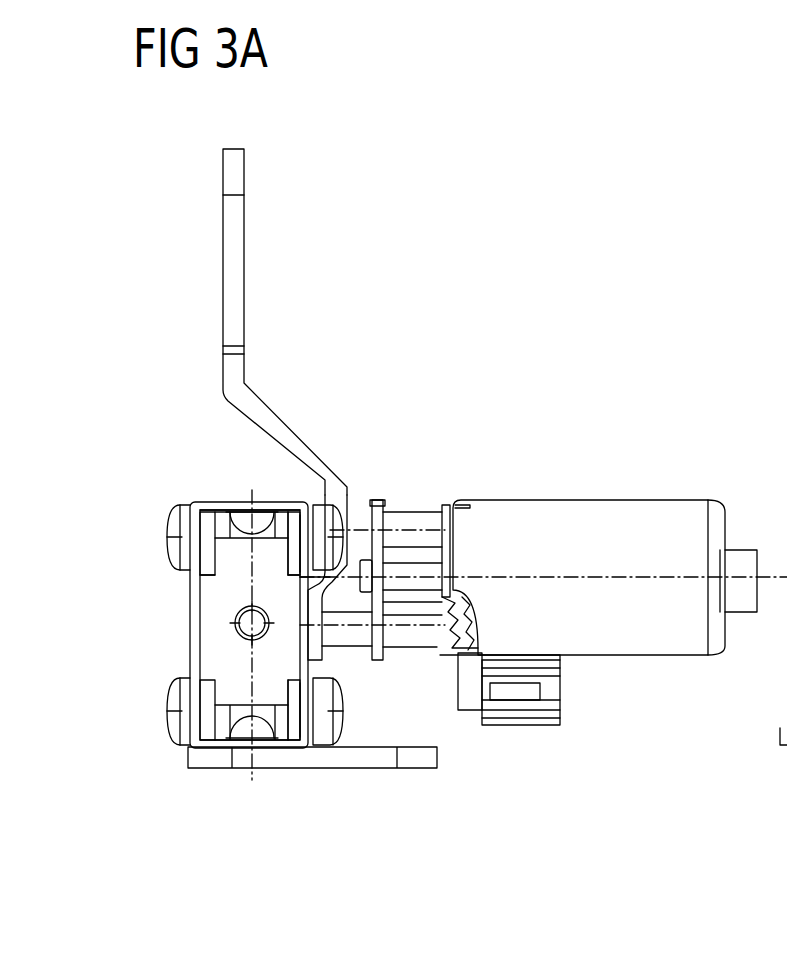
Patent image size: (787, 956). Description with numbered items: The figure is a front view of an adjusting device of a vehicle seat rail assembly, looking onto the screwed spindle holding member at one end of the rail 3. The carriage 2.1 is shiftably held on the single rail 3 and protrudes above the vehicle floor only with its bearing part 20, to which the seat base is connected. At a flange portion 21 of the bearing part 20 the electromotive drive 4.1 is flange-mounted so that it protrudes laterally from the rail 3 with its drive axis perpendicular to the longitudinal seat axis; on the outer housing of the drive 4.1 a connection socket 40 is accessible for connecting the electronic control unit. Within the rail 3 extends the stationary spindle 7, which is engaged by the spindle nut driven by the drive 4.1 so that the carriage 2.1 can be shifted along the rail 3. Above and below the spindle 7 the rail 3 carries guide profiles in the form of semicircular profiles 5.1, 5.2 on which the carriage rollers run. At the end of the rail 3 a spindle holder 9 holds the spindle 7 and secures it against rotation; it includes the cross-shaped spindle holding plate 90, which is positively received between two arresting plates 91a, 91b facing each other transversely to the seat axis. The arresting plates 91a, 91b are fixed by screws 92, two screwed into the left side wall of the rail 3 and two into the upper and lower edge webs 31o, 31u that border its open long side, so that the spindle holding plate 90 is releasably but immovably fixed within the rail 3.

The bearing part 20 is at (233, 173).
The carriage 2.1 is at (368, 238).
The electromotive drive 4.1 is at (656, 470).
The rail 3 is at (206, 492).
The semicircular profile 5.1 is at (243, 518).
The semicircular profile 5.2 is at (245, 735).
The upper edge web 31o is at (310, 525).
The lower edge web 31u is at (305, 735).
The arresting plate 91a is at (207, 523).
The arresting plate 91b is at (297, 722).
The screws 92 is at (168, 525).
The spindle 7 is at (245, 620).
The spindle holder 9 is at (172, 614).
The spindle holding plate 90 is at (216, 655).
The flange portion 21 is at (313, 628).
The connection socket 40 is at (555, 705).